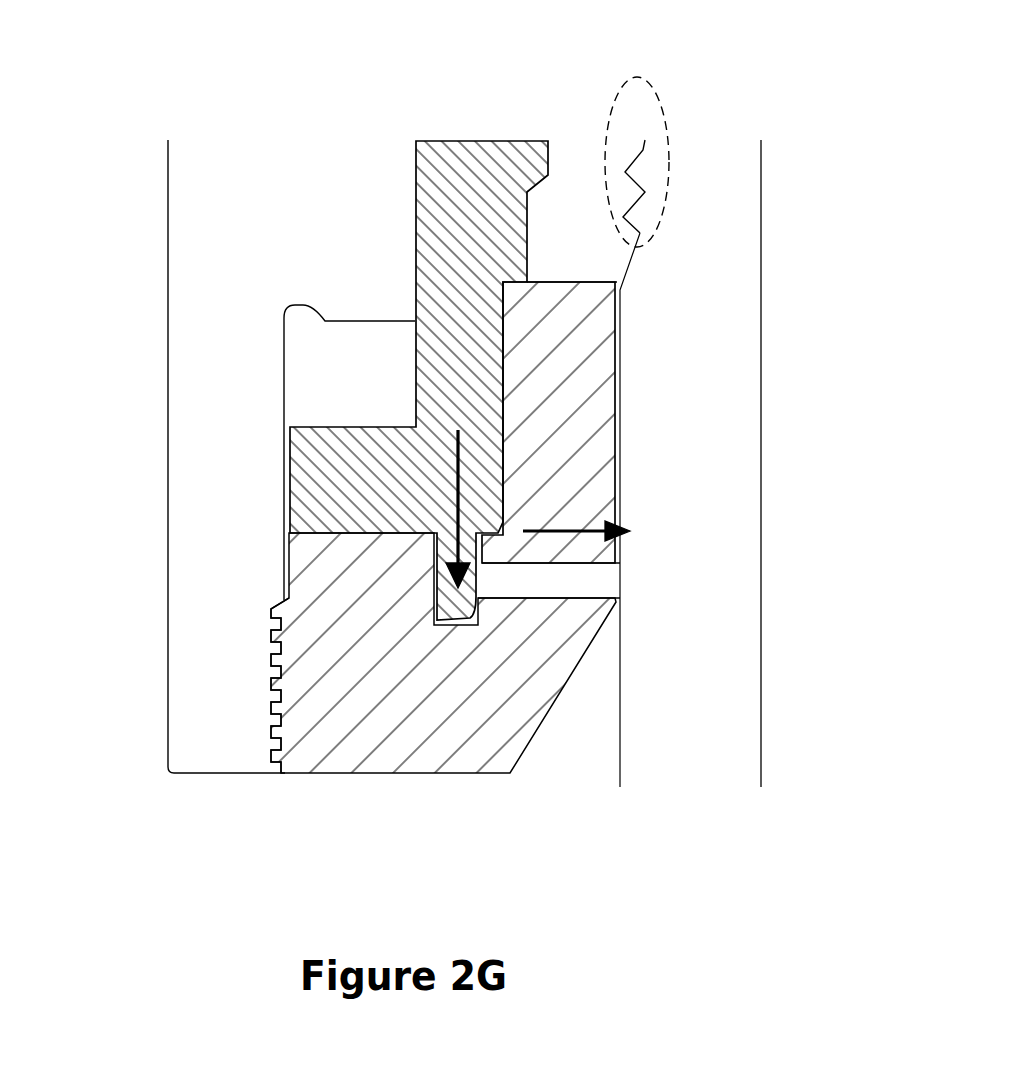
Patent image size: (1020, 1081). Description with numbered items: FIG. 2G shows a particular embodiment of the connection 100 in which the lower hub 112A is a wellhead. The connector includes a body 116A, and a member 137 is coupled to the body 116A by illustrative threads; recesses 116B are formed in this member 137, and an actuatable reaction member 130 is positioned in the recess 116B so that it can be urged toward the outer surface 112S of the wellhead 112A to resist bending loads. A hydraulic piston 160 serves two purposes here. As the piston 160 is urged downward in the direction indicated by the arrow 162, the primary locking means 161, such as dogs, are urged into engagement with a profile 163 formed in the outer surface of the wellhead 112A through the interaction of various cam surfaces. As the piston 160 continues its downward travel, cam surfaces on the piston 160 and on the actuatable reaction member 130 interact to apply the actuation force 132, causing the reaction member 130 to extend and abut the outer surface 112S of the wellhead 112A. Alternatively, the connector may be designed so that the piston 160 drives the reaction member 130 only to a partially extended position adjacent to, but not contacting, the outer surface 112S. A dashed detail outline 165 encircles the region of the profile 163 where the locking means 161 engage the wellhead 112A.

The connection 100 is at (713, 112).
The lower hub 112A is at (677, 540).
The outer surface 112S is at (620, 371).
The body 116A is at (210, 230).
The recesses 116B is at (558, 600).
The actuatable reaction member 130 is at (570, 573).
The actuation force 132 is at (620, 510).
The member 137 is at (390, 733).
The hydraulic piston 160 is at (465, 178).
The primary locking means 161 is at (567, 190).
The arrow 162 is at (452, 457).
The profile 163 is at (643, 187).
The detail region 165 is at (660, 103).